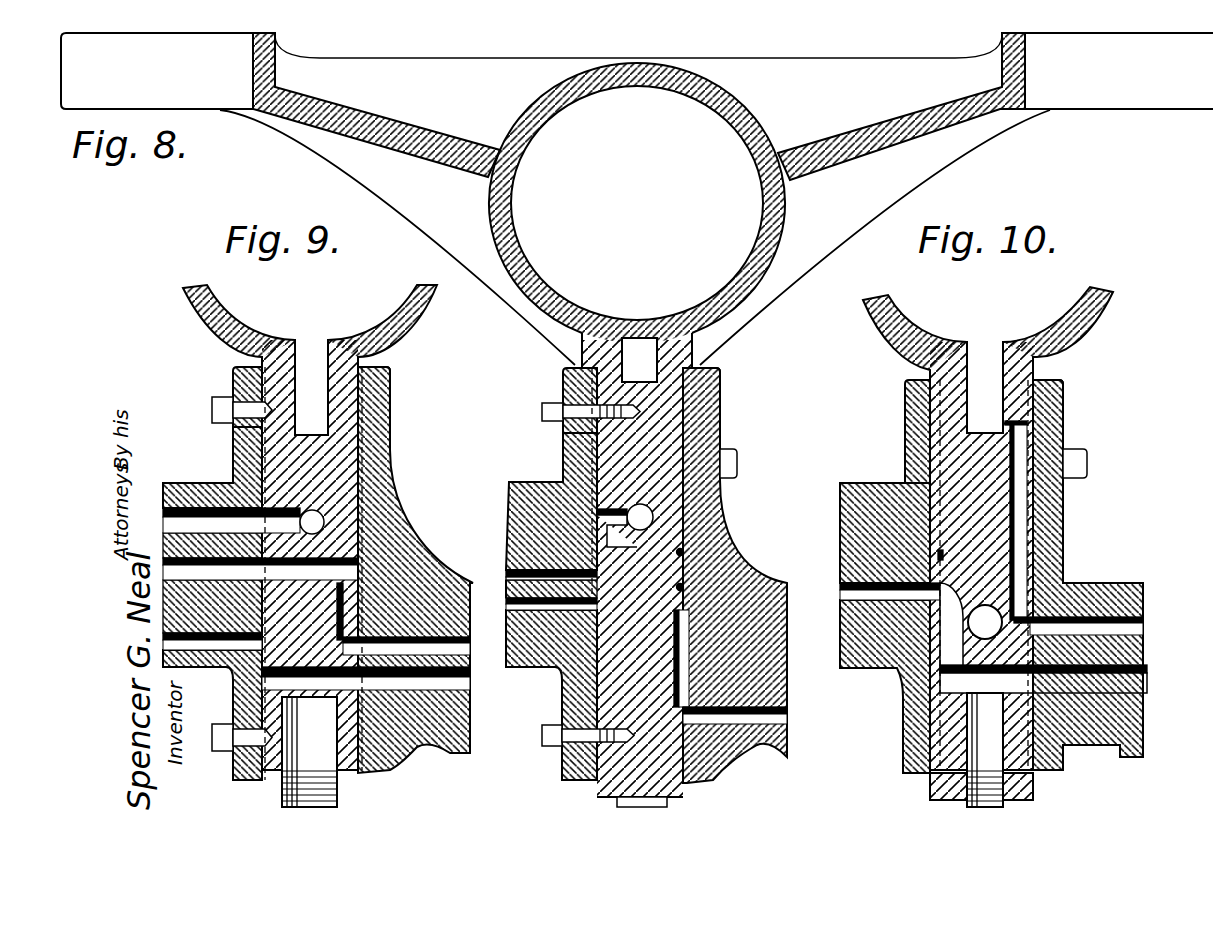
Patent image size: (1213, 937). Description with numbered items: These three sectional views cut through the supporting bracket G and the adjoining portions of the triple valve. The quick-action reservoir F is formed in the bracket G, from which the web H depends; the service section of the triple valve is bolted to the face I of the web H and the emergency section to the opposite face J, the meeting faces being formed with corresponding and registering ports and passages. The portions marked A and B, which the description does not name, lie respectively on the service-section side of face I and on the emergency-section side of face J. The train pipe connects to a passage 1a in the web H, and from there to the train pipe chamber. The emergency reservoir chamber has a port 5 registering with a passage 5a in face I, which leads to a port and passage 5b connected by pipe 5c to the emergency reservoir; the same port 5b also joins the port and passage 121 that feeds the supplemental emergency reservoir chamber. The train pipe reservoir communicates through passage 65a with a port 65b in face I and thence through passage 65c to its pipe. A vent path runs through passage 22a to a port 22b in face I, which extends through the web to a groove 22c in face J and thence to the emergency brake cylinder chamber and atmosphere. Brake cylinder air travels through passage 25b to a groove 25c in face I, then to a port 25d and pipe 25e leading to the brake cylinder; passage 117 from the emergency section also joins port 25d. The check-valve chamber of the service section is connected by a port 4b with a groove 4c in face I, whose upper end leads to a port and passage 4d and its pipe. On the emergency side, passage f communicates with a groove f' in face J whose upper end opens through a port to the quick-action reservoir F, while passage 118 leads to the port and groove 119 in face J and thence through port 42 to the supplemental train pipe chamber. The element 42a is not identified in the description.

In FIG. 8, the supporting bracket G is at (378, 178).
In FIG. 8, the quick-action reservoir F is at (637, 203).
In FIG. 9, the quick-action reservoir F is at (353, 340).
In FIG. 10, the quick-action reservoir F is at (933, 333).
In FIG. 8, the depending web H is at (692, 790).
In FIG. 10, the depending web H is at (992, 463).
In FIG. 8, the face of the web I is at (577, 392).
In FIG. 9, the face of the web I is at (265, 393).
In FIG. 10, the face of the web I is at (937, 405).
In FIG. 8, the body A is at (562, 475).
In FIG. 9, the body A is at (233, 460).
In FIG. 10, the body A is at (876, 483).
In FIG. 8, the housing B is at (740, 575).
In FIG. 9, the housing B is at (415, 570).
In FIG. 10, the housing B is at (1060, 497).
In FIG. 8, the face of the web J is at (690, 393).
In FIG. 9, the face of the web J is at (390, 386).
In FIG. 10, the face of the web J is at (1035, 403).
In FIG. 8, the port and passage 4d is at (645, 505).
In FIG. 8, the groove 4c is at (615, 537).
In FIG. 10, the groove 4c is at (947, 560).
In FIG. 8, the port 4b is at (506, 592).
In FIG. 8, the groove f' is at (723, 520).
In FIG. 10, the groove f' is at (1058, 520).
In FIG. 10, the passage f is at (1097, 618).
In FIG. 8, the port and groove 119 is at (686, 587).
In FIG. 9, the port and groove 119 is at (352, 540).
In FIG. 8, the passage 22a is at (508, 607).
In FIG. 8, the port 22b is at (790, 594).
In FIG. 8, the groove 22c is at (681, 674).
In FIG. 8, the groove 25c is at (597, 673).
In FIG. 9, the groove 25c is at (277, 662).
In FIG. 9, the passage 25b is at (167, 650).
In FIG. 9, the port 25d is at (262, 672).
In FIG. 9, the pipe 25e is at (288, 805).
In FIG. 9, the port 42 is at (170, 572).
In FIG. 9, the ball 42a is at (326, 520).
In FIG. 9, the passage 65a is at (225, 482).
In FIG. 9, the port 65b is at (318, 472).
In FIG. 9, the passage 65c is at (340, 505).
In FIG. 9, the passage 117 is at (437, 693).
In FIG. 9, the passage 118 is at (462, 585).
In FIG. 10, the passage 1a is at (992, 618).
In FIG. 10, the port 5 is at (945, 598).
In FIG. 10, the passage 5a is at (947, 638).
In FIG. 10, the port and passage 5b is at (947, 685).
In FIG. 10, the pipe 5c is at (965, 806).
In FIG. 10, the port and passage 121 is at (1133, 685).